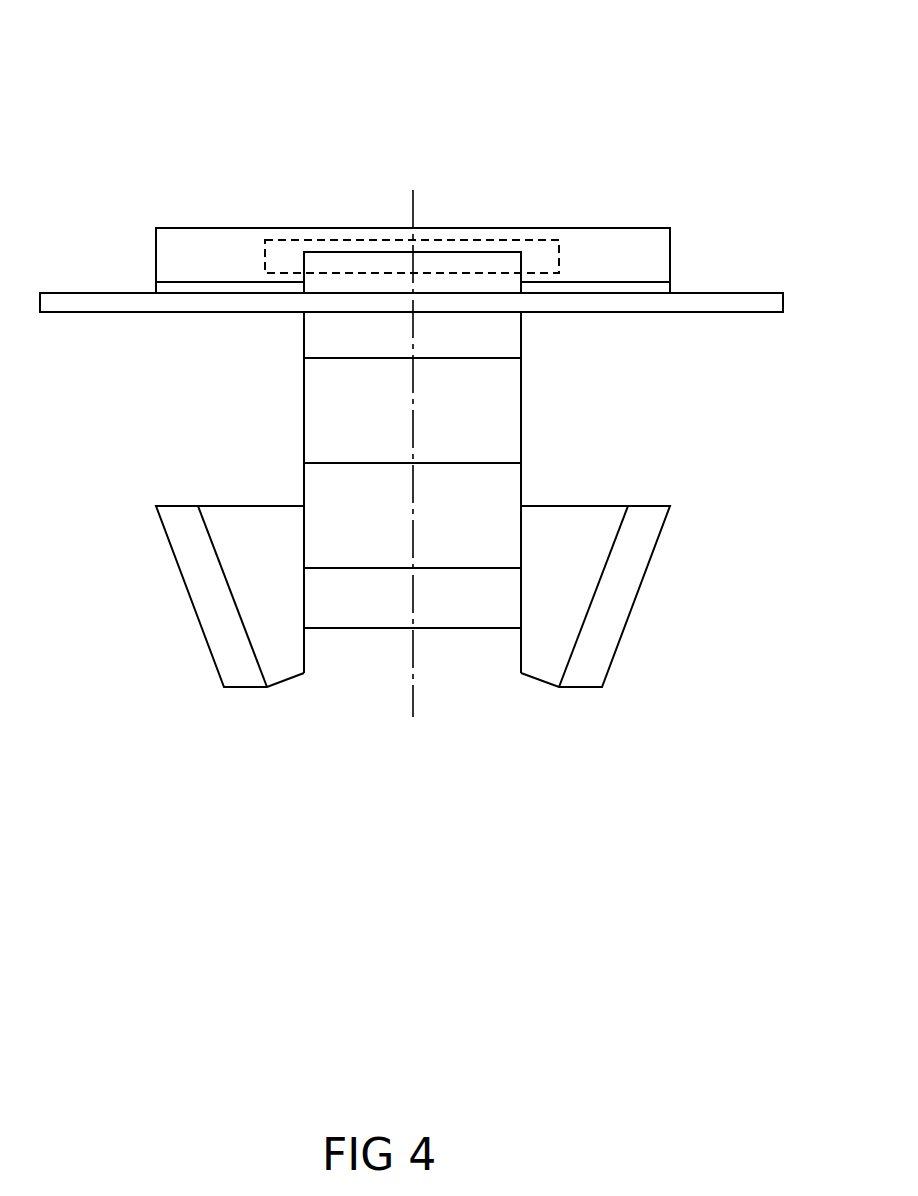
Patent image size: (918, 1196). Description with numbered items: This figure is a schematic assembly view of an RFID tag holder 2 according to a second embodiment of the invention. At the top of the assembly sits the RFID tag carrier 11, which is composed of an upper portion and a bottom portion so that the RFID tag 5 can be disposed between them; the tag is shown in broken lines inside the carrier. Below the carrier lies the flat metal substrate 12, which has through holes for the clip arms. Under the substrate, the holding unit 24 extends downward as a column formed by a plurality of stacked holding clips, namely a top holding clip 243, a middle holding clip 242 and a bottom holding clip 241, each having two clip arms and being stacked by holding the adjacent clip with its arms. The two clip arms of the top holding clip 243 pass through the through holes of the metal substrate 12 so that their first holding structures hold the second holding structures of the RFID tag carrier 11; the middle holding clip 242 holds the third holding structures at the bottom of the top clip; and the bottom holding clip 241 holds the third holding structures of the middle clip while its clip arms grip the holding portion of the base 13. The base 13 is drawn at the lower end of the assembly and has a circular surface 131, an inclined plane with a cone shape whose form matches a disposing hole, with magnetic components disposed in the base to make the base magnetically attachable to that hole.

The RFID tag holder 2 is at (142, 106).
The RFID tag 5 is at (520, 247).
The RFID tag carrier 11 is at (662, 250).
The metal substrate 12 is at (715, 302).
The base 13 is at (177, 625).
The circular surface 131 is at (185, 546).
The holding unit 24 is at (260, 407).
The bottom holding clip 241 is at (470, 592).
The middle holding clip 242 is at (492, 413).
The top holding clip 243 is at (320, 337).